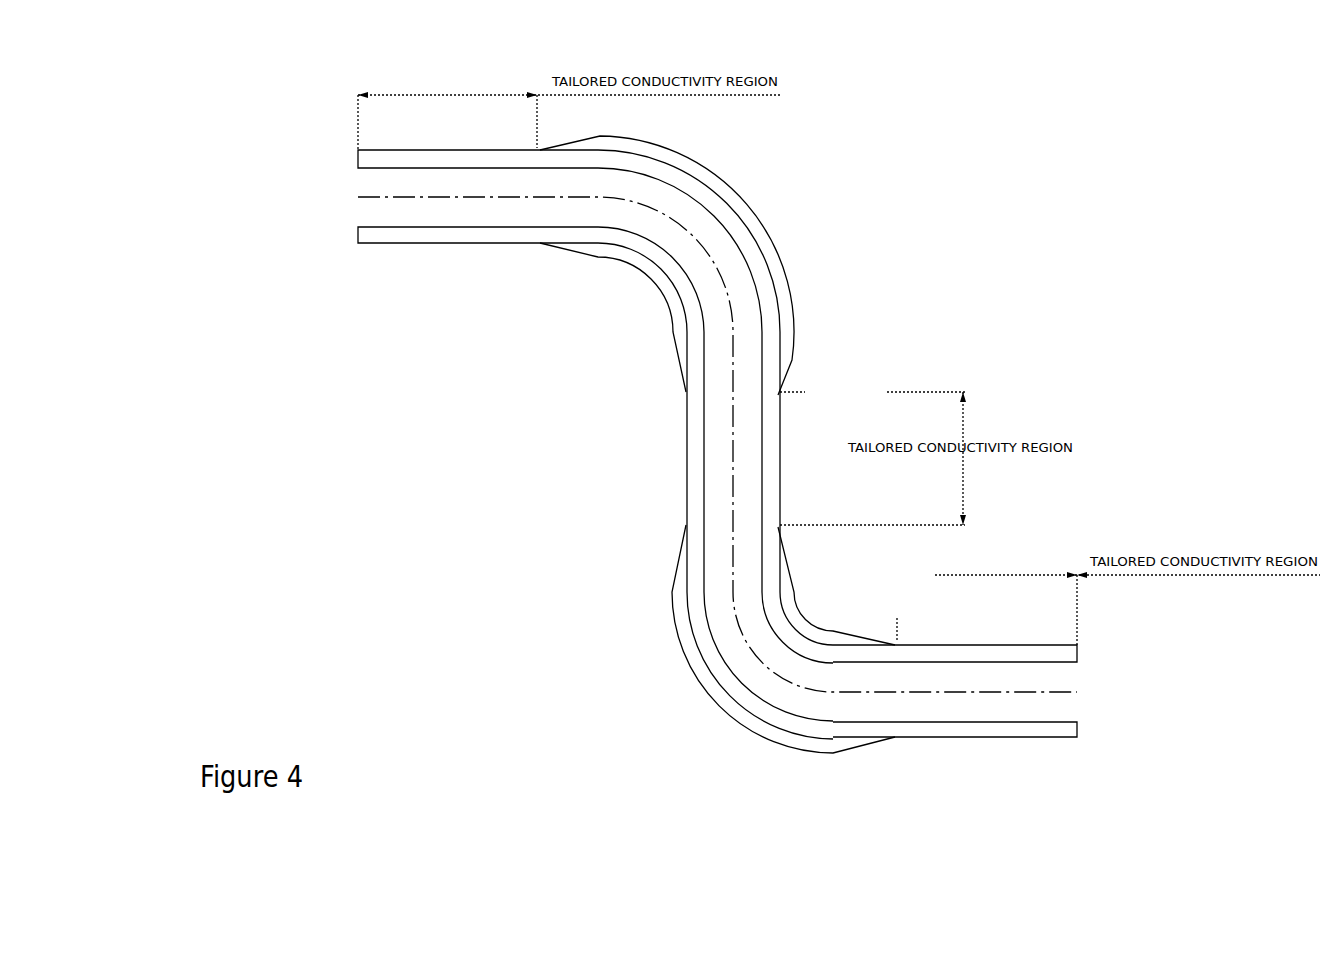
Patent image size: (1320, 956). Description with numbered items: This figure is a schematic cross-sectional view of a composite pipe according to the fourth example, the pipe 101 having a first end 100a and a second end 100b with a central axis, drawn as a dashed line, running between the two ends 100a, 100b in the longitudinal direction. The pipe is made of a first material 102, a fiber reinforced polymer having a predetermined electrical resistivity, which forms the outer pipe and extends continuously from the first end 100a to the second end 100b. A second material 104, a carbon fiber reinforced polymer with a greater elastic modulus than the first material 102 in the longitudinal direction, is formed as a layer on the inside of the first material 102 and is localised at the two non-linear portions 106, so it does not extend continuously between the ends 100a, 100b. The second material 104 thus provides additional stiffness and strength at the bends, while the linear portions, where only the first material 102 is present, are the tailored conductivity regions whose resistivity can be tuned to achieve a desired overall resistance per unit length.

The first end 100a is at (340, 197).
The second end 100b is at (1098, 708).
The conduit 101 is at (1012, 306).
The first material 102 is at (779, 440).
The second material 104 is at (773, 276).
The non-linear portions 106 is at (782, 185).